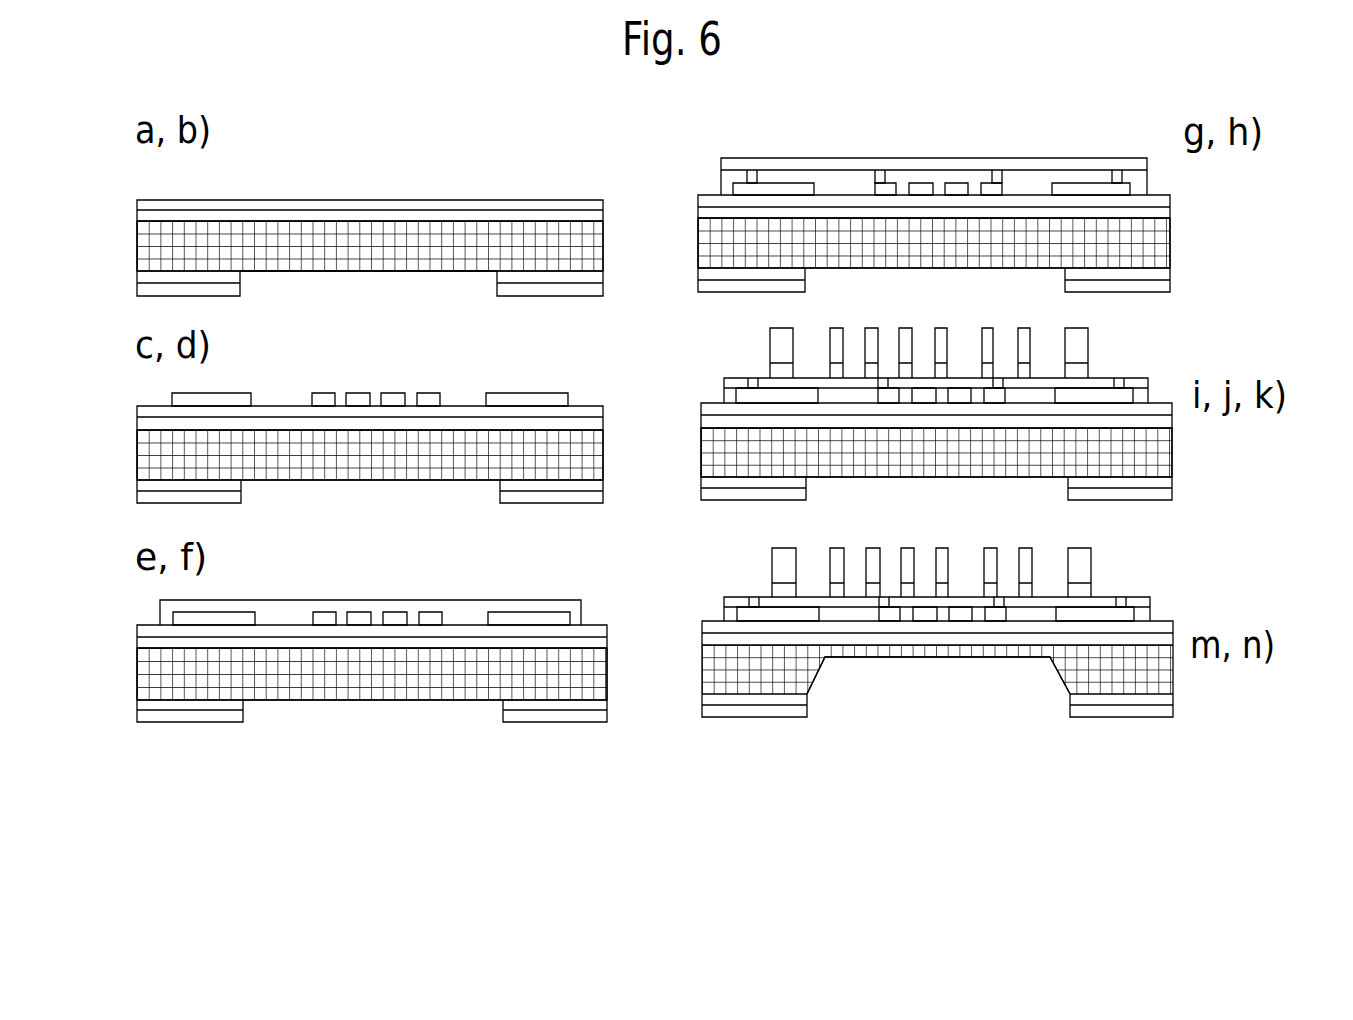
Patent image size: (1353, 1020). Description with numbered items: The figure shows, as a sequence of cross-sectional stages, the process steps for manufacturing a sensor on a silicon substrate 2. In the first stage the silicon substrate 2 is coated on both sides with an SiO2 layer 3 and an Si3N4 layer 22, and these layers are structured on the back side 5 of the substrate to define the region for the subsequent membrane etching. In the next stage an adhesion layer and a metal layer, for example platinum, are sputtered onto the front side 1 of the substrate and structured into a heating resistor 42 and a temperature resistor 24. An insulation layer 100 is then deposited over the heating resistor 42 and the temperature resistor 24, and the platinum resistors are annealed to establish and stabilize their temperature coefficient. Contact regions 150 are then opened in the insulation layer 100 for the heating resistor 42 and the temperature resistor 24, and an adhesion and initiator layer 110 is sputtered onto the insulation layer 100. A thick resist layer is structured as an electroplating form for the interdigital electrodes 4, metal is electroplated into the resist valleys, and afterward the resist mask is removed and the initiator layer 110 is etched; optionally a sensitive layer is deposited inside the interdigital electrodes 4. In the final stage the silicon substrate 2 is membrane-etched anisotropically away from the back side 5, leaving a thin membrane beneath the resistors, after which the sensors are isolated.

The front side 1 is at (378, 186).
The Si3N4 layer 22 is at (604, 200).
The SiO2 layer 3 is at (604, 209).
The silicon substrate 2 is at (593, 243).
The back side 5 is at (522, 306).
The heating resistor 42 is at (425, 393).
The temperature resistor 24 is at (500, 395).
The insulation layer 100 is at (461, 612).
The contact regions 150 is at (883, 175).
The adhesion and initiator layer 110 is at (1110, 162).
The interdigital electrodes 4 is at (1083, 345).